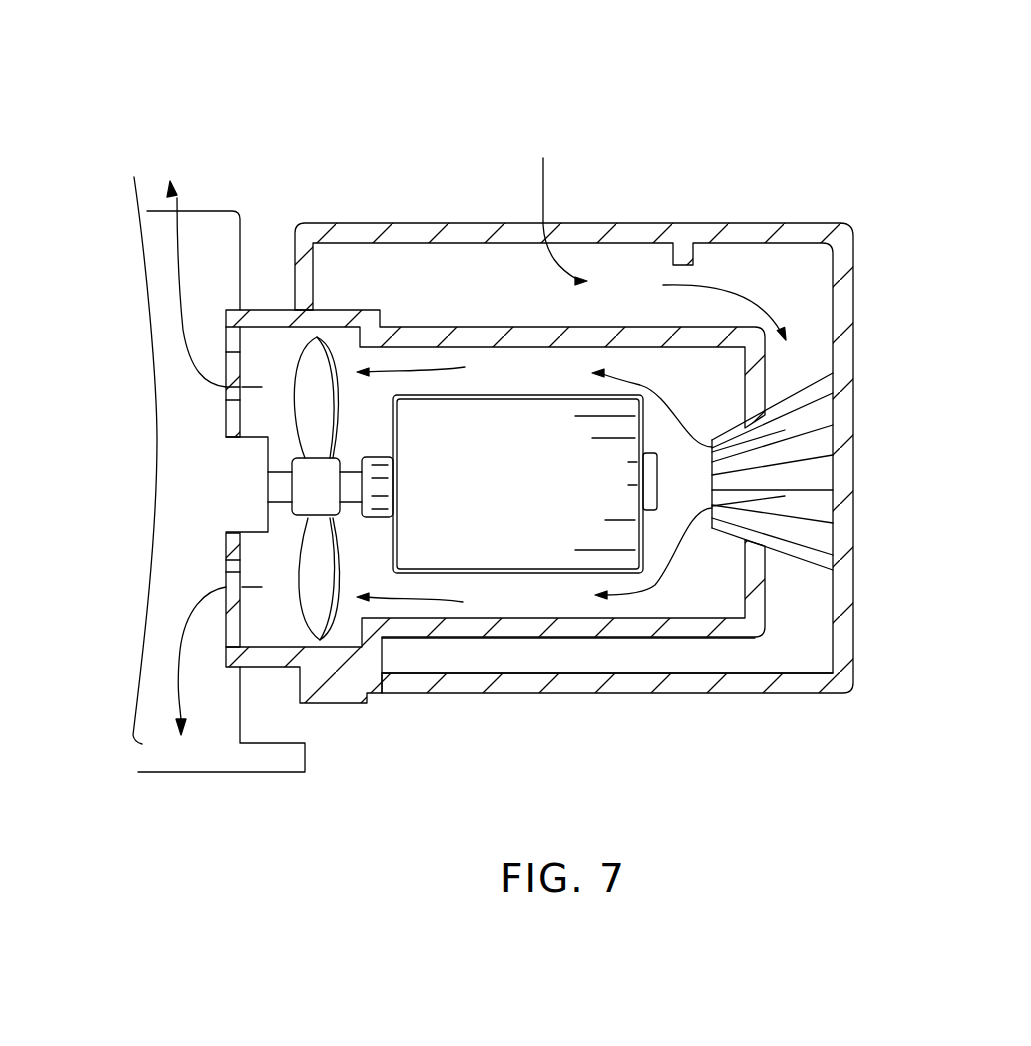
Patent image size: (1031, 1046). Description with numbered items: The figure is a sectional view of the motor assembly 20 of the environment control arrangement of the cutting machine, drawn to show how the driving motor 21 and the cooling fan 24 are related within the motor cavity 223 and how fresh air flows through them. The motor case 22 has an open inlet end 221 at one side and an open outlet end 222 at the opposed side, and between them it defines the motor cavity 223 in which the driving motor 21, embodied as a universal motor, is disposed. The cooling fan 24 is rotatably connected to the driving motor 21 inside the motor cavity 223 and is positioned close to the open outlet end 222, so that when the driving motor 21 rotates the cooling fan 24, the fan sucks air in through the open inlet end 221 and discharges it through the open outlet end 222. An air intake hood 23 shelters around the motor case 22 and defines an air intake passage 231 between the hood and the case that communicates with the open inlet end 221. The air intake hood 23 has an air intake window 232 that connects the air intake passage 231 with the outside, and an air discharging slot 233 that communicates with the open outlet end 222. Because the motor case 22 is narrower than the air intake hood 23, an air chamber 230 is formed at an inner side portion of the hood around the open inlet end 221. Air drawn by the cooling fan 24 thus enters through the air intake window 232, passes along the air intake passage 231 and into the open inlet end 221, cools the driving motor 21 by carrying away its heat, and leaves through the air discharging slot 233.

The motor assembly 20 is at (882, 188).
The driving motor 21 is at (423, 440).
The motor case 22 is at (673, 627).
The air intake hood 23 is at (732, 235).
The cooling fan 24 is at (320, 560).
The open inlet end 221 is at (720, 567).
The open outlet end 222 is at (288, 622).
The motor cavity 223 is at (540, 590).
The air chamber 230 is at (798, 373).
The air intake passage 231 is at (495, 286).
The air intake window 232 is at (614, 282).
The air discharging slot 233 is at (226, 362).